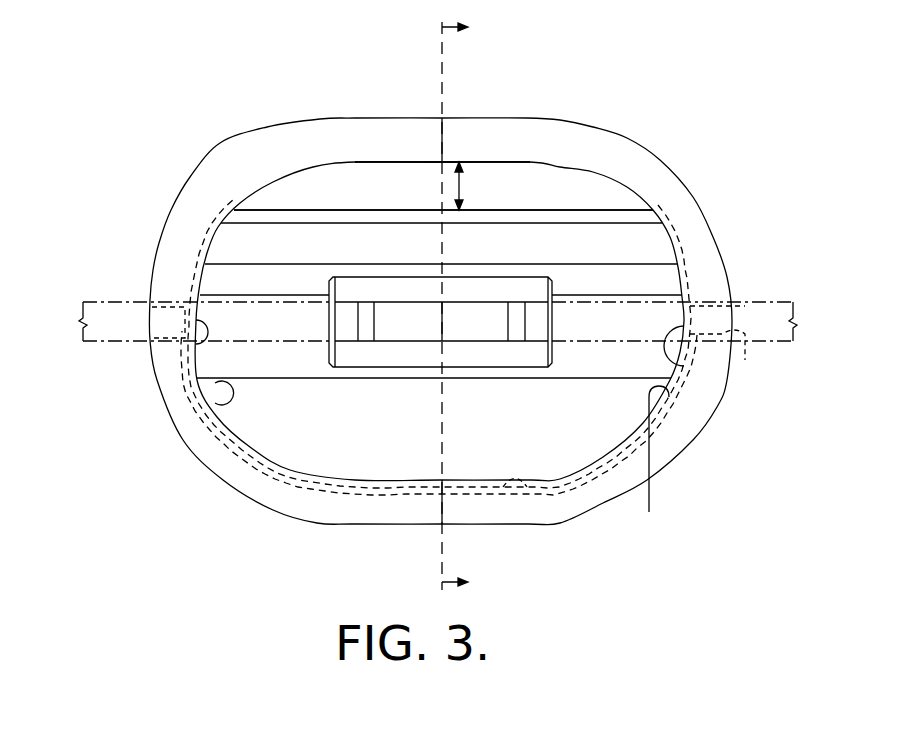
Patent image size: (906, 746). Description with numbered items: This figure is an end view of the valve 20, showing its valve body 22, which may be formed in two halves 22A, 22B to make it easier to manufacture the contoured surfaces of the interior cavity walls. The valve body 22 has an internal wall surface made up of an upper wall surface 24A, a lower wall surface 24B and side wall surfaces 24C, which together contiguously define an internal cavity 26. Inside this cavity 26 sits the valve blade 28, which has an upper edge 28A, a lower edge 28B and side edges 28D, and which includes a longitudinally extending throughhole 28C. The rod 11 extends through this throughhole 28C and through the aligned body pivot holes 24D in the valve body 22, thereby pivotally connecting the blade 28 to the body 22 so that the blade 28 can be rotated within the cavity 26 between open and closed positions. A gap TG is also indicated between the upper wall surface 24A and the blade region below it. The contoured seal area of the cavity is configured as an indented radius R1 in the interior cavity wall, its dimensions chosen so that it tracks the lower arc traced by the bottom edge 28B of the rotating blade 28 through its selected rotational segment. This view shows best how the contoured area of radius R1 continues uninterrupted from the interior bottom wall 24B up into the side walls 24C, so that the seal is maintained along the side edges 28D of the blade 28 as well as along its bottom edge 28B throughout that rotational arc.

The valve 20 is at (343, 70).
The valve body 22 is at (448, 298).
The valve body half 22A is at (223, 178).
The valve body half 22B is at (652, 172).
The upper wall surface 24A is at (497, 163).
The lower wall surface 24B is at (527, 487).
The side wall surfaces 24C is at (182, 346).
The body pivot holes 24D is at (142, 310).
The internal cavity 26 is at (410, 178).
The valve blade 28 is at (476, 342).
The upper edge 28A is at (321, 220).
The lower edge 28B is at (410, 478).
The throughhole 28C is at (650, 295).
The side edges 28D is at (225, 402).
The rod 11 is at (105, 348).
The gap thickness TG is at (463, 186).
The indented radius R1 is at (480, 485).